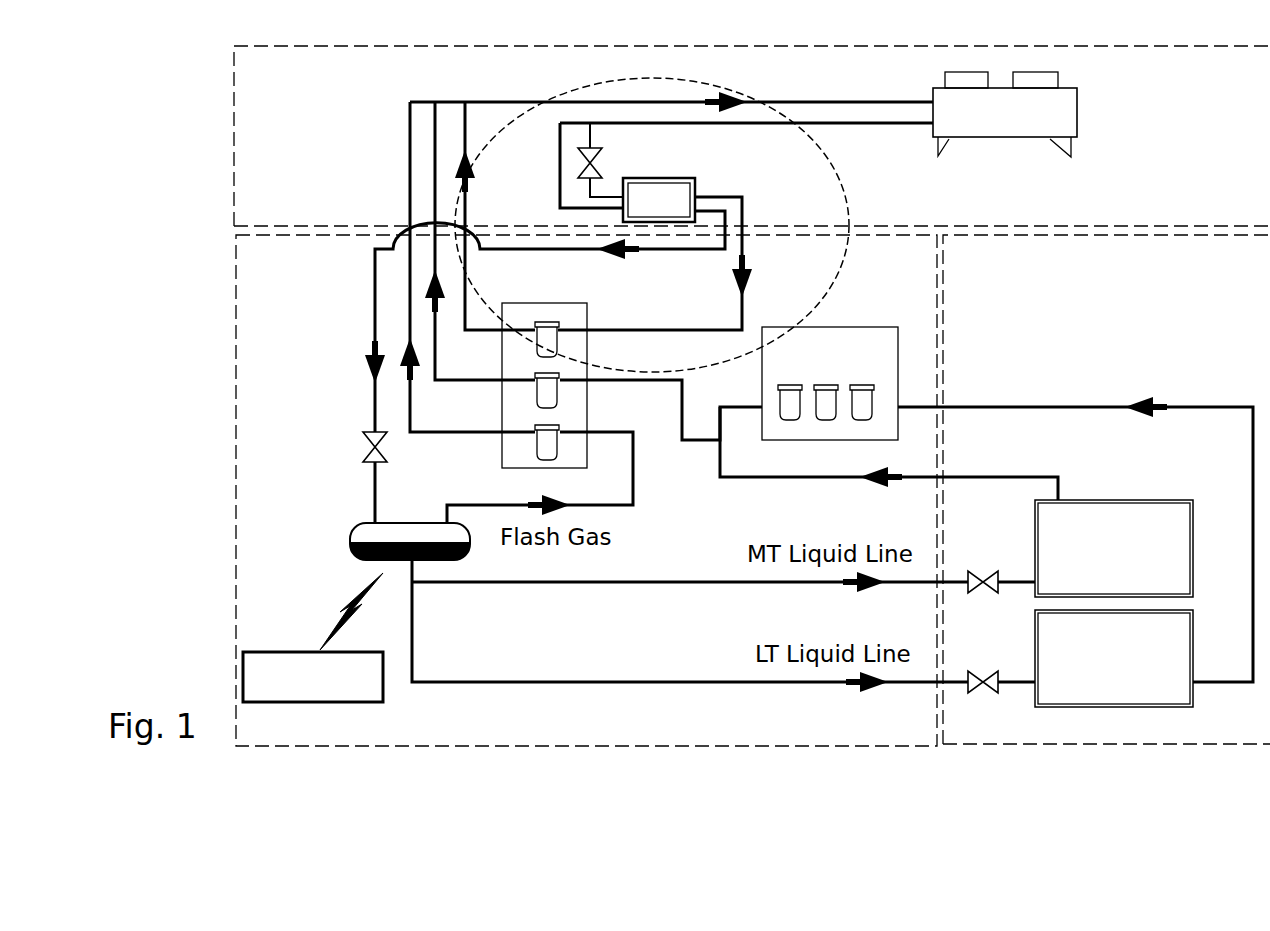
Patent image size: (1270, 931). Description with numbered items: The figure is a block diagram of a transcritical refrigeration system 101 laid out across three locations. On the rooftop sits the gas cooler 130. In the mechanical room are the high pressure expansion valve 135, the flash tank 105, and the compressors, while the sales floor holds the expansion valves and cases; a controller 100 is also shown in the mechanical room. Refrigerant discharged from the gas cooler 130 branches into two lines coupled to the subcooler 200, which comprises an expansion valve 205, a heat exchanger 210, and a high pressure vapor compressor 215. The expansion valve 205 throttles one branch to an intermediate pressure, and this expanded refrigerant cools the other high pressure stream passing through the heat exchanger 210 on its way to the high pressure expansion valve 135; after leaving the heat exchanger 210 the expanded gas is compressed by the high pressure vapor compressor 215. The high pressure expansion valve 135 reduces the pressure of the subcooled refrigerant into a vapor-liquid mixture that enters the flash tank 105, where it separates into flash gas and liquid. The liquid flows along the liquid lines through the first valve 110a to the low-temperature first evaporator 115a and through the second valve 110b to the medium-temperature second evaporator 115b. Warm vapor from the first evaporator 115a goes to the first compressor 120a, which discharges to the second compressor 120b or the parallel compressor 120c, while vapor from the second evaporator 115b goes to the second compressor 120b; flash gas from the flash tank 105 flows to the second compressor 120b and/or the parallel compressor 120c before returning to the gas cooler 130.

The transcritical refrigeration system 101 is at (208, 131).
The controller 100 is at (300, 650).
The flash tank 105 is at (350, 552).
The first valve 110a is at (1000, 643).
The second valve 110b is at (1000, 541).
The first evaporator 115a is at (1114, 658).
The second evaporator 115b is at (1114, 548).
The first compressor 120a is at (830, 383).
The second compressor 120b is at (535, 392).
The parallel compressor 120c is at (535, 446).
The gas cooler 130 is at (1005, 114).
The high pressure expansion valve 135 is at (363, 447).
The subcooler 200 is at (856, 215).
The expansion valve 205 is at (606, 167).
The heat exchanger 210 is at (698, 178).
The high pressure vapor compressor 215 is at (502, 368).